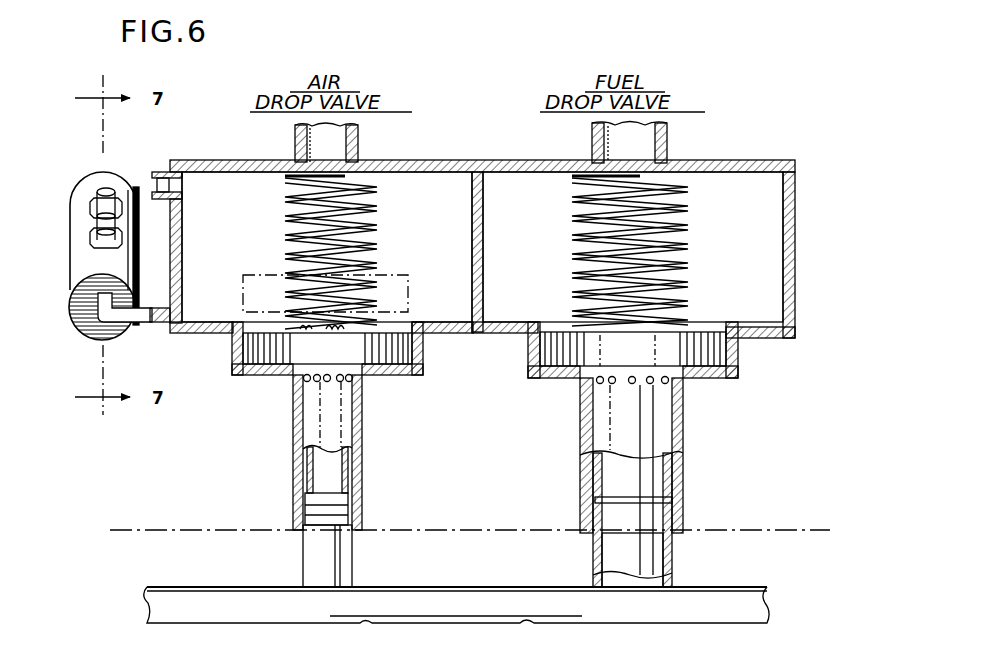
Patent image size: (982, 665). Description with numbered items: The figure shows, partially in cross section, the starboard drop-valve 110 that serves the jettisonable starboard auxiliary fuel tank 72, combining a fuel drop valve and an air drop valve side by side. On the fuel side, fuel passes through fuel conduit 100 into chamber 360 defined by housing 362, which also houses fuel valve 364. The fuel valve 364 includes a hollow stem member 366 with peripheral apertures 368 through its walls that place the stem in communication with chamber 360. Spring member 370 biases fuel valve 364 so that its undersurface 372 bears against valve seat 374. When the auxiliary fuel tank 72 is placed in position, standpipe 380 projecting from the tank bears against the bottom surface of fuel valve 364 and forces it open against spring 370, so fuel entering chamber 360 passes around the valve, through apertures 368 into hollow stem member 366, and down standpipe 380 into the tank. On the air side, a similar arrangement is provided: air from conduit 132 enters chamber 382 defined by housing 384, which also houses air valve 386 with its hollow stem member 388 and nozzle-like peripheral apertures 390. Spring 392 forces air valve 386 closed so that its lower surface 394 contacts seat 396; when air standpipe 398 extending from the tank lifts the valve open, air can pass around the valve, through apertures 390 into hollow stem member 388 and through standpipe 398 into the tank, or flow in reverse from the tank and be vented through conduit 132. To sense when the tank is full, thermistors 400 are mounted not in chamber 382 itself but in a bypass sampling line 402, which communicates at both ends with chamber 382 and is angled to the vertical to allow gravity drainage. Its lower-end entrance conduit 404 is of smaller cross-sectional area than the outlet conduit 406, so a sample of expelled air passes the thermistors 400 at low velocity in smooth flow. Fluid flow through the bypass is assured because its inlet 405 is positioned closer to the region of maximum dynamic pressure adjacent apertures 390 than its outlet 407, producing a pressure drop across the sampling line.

The starboard drop-valve 110 is at (752, 142).
The housing 384 is at (446, 161).
The housing 362 is at (772, 160).
The outlet 407 is at (185, 182).
The outlet conduit 406 is at (160, 172).
The bypass sampling line 402 is at (98, 165).
The thermistors 400 is at (100, 210).
The entrance conduit 404 is at (165, 322).
The inlet 405 is at (198, 318).
The conduit 132 is at (362, 135).
The chamber 382 is at (445, 236).
The spring 392 is at (285, 216).
The air valve 386 is at (393, 282).
The lower surface 394 is at (385, 372).
The seat 396 is at (268, 360).
The peripheral apertures 390 is at (322, 378).
The hollow stem member 388 is at (325, 470).
The air standpipe 398 is at (320, 556).
The fuel conduit 100 is at (652, 148).
The chamber 360 is at (752, 258).
The spring member 370 is at (590, 212).
The fuel valve 364 is at (738, 352).
The undersurface 372 is at (562, 360).
The valve seat 374 is at (578, 352).
The peripheral apertures 368 is at (640, 380).
The hollow stem member 366 is at (642, 432).
The standpipe 380 is at (668, 560).
The starboard auxiliary fuel tank 72 is at (147, 586).